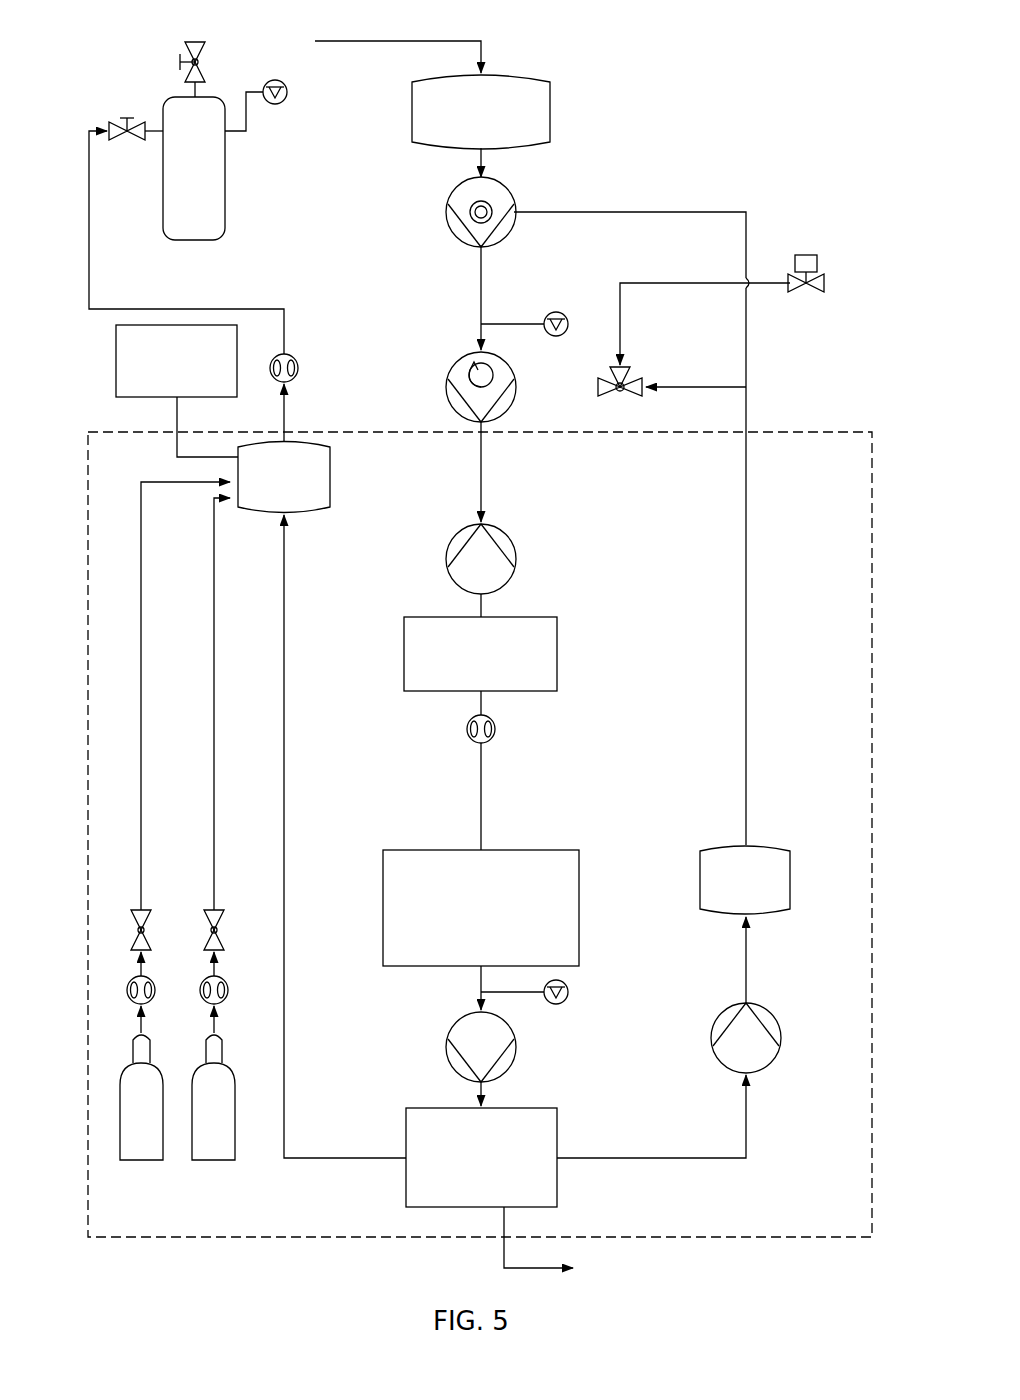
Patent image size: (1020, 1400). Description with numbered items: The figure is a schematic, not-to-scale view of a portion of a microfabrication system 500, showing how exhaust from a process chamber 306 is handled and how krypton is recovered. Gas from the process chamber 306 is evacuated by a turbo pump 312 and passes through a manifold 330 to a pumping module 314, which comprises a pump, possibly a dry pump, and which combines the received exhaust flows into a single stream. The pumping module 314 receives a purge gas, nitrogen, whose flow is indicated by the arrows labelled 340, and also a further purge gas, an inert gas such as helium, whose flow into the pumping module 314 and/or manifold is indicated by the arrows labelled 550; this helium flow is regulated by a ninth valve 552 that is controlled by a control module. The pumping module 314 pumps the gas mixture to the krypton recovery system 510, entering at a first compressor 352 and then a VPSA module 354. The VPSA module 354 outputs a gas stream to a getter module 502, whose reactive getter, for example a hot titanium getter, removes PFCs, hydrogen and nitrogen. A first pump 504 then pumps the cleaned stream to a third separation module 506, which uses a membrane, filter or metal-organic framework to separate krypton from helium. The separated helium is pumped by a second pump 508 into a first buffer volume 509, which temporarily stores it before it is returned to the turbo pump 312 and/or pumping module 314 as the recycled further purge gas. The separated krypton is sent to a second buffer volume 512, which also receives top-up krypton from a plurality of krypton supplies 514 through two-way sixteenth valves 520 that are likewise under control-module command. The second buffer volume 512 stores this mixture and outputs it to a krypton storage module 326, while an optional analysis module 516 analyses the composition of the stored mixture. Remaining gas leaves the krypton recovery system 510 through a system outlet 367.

The microfabrication system 500 is at (720, 70).
The process chamber 306 is at (550, 112).
The turbo pump 312 is at (513, 196).
The krypton storage module 326 is at (225, 190).
The manifold 330 is at (478, 324).
The pumping module 314 is at (447, 376).
The purge gas flow 340 is at (656, 284).
The further purge gas flow 550 is at (748, 387).
The ninth valve 552 is at (628, 398).
The analysis module 516 is at (116, 350).
The second buffer volume 512 is at (330, 480).
The first compressor 352 is at (516, 552).
The VPSA module 354 is at (558, 648).
The krypton recovery system 510 is at (872, 672).
The getter module 502 is at (564, 850).
The first buffer volume 509 is at (790, 870).
The sixteenth valves 520 is at (150, 930).
The first pump 504 is at (516, 1052).
The second pump 508 is at (780, 1030).
The third separation module 506 is at (558, 1118).
The krypton supplies 514 is at (125, 1160).
The system outlet 367 is at (560, 1272).